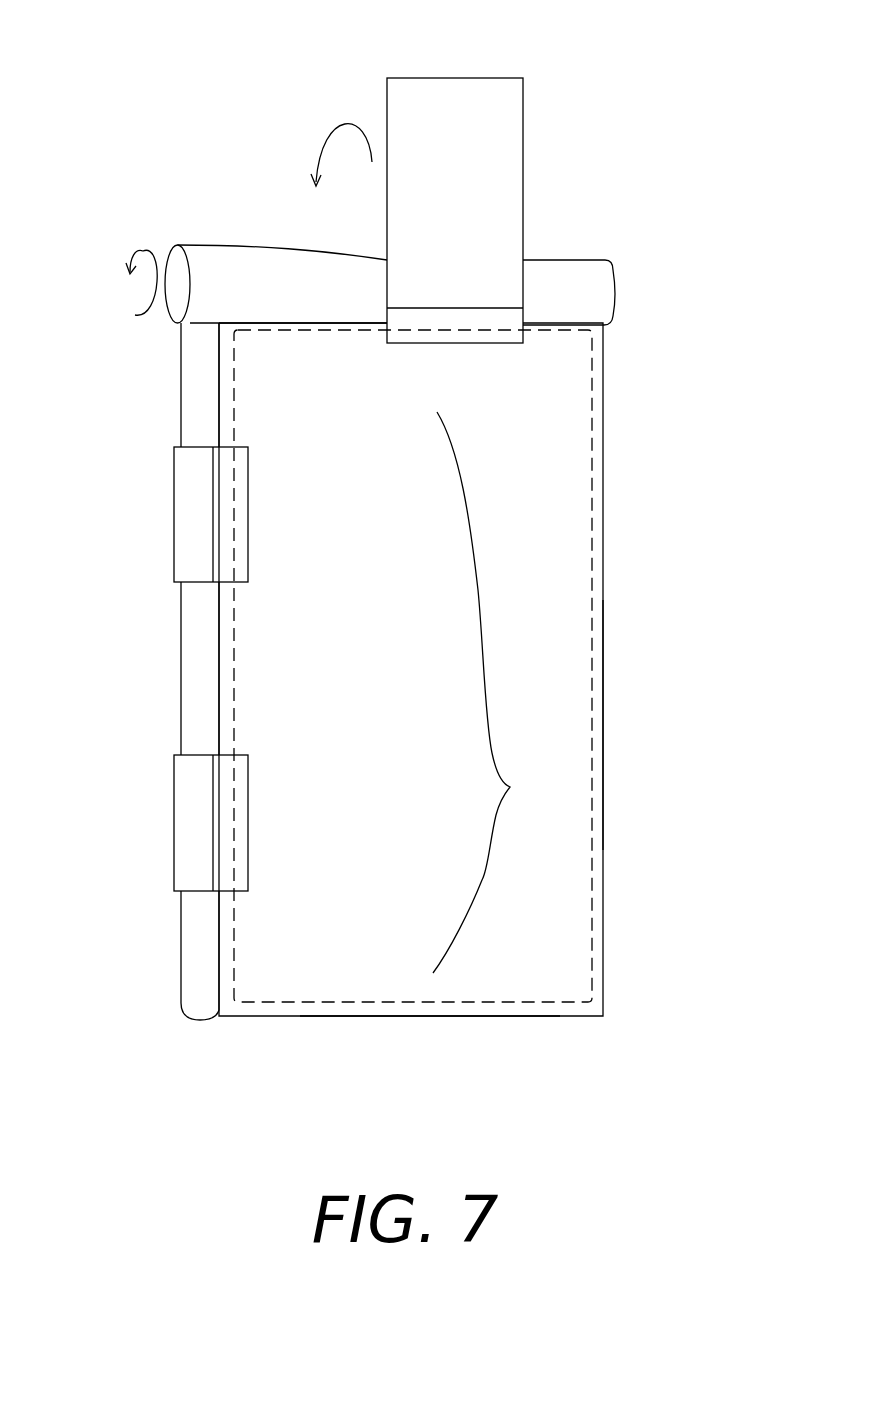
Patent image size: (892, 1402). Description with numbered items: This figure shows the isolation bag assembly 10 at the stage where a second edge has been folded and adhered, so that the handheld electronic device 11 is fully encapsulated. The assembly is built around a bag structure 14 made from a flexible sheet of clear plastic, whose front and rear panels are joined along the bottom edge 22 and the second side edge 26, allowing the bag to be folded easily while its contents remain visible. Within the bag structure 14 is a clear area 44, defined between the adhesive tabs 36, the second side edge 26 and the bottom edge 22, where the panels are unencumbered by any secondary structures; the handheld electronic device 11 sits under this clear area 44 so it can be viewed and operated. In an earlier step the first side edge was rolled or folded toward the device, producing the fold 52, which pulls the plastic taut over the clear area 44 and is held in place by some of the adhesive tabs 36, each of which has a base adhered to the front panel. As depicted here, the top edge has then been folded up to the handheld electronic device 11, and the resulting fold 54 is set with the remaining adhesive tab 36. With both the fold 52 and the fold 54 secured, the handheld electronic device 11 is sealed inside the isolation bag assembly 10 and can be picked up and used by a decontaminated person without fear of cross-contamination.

The isolation bag assembly 10 is at (178, 158).
The handheld electronic device 11 is at (592, 368).
The bag structure 14 is at (603, 477).
The bottom edge 22 is at (472, 1020).
The second side edge 26 is at (603, 722).
The adhesive tabs 36 is at (522, 107).
The clear area 44 is at (510, 787).
The fold 52 is at (202, 397).
The fold 54 is at (560, 280).